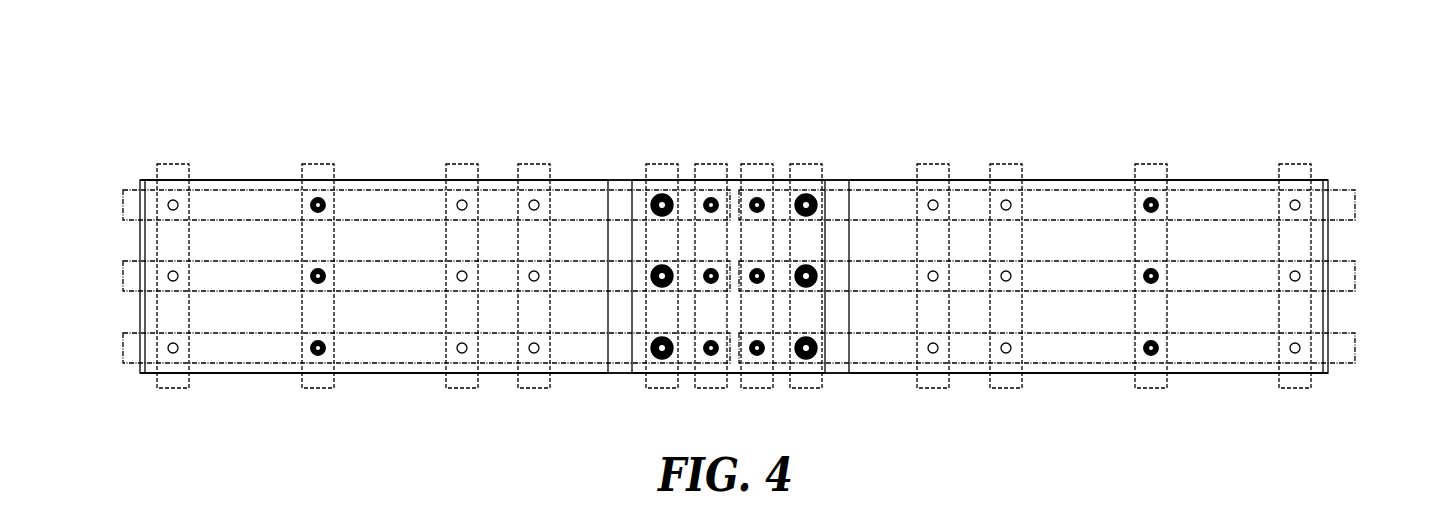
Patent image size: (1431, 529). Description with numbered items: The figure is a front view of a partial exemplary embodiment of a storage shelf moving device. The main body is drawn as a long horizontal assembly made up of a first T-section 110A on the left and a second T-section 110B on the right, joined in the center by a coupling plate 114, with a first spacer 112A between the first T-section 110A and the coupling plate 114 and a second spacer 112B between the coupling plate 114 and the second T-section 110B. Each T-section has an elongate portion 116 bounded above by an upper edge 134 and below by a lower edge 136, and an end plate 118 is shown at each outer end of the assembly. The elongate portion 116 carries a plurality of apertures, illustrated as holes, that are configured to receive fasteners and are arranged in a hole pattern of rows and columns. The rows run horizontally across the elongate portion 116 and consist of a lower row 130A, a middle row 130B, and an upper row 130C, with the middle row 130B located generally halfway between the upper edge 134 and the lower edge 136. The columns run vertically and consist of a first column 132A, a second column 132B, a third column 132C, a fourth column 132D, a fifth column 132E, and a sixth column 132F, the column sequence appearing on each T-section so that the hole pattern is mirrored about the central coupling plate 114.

The first T-section 110A is at (257, 171).
The second T-section 110B is at (1235, 171).
The first spacer 112A is at (622, 180).
The second spacer 112B is at (837, 180).
The coupling plate 114 is at (747, 179).
The elongate portion 116 is at (734, 216).
The end plate 118 is at (141, 180).
The lower row 130A is at (113, 349).
The middle row 130B is at (113, 277).
The upper row 130C is at (113, 204).
The first column 132A is at (173, 157).
The second column 132B is at (318, 157).
The third column 132C is at (462, 157).
The fourth column 132D is at (534, 157).
The fifth column 132E is at (663, 158).
The sixth column 132F is at (711, 158).
The upper edge 134 is at (407, 180).
The lower edge 136 is at (412, 373).